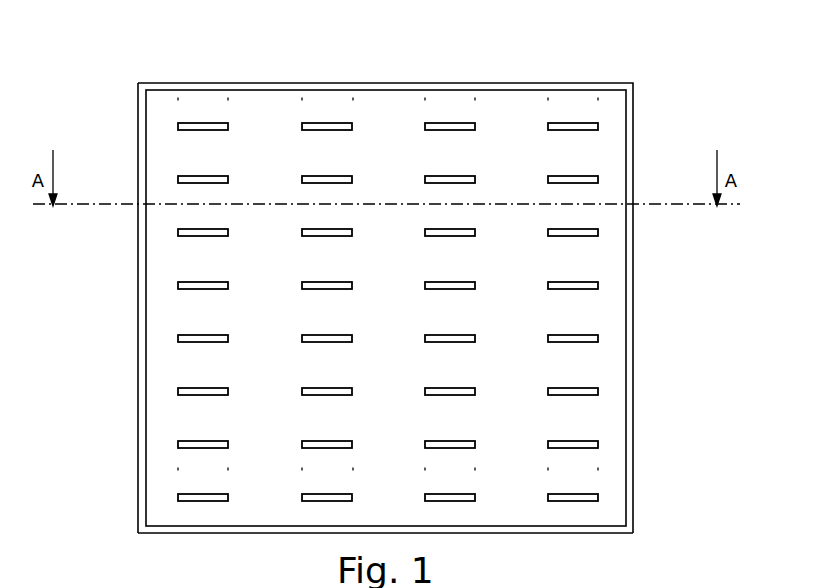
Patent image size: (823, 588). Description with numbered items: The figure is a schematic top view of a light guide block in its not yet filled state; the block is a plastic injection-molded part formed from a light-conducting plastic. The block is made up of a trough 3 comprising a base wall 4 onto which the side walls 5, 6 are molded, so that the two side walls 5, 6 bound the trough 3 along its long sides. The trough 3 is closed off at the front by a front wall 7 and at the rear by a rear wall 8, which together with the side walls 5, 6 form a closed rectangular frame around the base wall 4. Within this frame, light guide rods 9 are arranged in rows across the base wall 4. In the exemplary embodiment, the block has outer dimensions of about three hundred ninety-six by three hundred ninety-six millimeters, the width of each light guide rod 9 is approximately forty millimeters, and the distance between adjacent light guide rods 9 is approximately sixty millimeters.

The trough 3 is at (610, 258).
The base wall 4 is at (577, 315).
The side wall 5 is at (626, 363).
The side wall 6 is at (138, 435).
The front wall 7 is at (173, 535).
The rear wall 8 is at (440, 82).
The light guide rods 9 is at (598, 395).